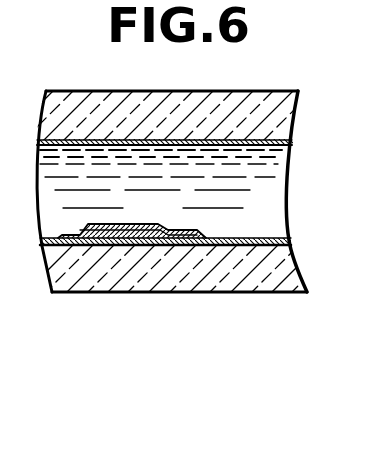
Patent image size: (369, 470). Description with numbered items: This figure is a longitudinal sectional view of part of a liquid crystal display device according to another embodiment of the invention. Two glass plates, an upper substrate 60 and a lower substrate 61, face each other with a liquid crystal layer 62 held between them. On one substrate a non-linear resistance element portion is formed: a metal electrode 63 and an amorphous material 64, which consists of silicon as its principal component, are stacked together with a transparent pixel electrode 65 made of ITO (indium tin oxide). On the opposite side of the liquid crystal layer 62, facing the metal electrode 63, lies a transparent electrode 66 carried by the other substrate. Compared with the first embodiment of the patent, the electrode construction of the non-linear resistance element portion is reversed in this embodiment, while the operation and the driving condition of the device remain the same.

The upper substrate 60 is at (262, 277).
The lower substrate 61 is at (257, 100).
The liquid crystal layer 62 is at (275, 186).
The metal electrode 63 is at (127, 247).
The amorphous material 64 is at (193, 243).
The transparent pixel electrode 65 is at (246, 239).
The transparent electrode 66 is at (262, 138).